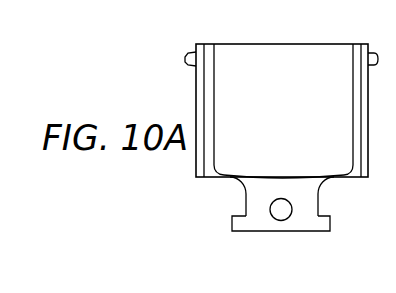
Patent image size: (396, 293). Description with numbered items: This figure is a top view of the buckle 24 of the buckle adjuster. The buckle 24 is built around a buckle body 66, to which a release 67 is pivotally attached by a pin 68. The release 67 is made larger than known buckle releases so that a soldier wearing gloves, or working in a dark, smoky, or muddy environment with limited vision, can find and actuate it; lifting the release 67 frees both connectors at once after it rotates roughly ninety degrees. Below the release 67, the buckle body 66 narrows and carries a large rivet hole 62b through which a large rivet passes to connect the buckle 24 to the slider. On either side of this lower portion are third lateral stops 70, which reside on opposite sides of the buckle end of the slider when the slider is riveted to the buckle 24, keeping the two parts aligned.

The buckle 24 is at (243, 142).
The release 67 is at (285, 107).
The pin 68 is at (185, 56).
The buckle body 66 is at (245, 197).
The third lateral stops 70 is at (232, 227).
The large rivet hole 62b is at (282, 209).